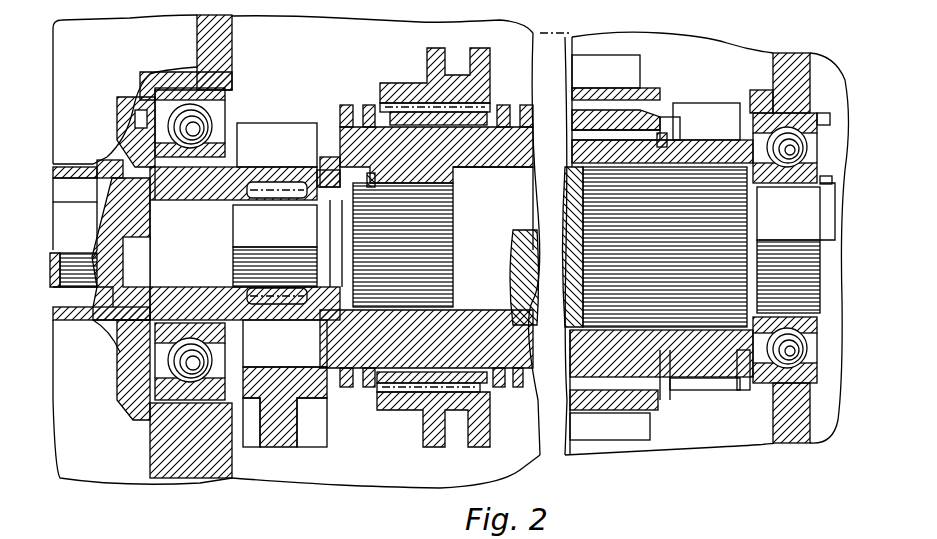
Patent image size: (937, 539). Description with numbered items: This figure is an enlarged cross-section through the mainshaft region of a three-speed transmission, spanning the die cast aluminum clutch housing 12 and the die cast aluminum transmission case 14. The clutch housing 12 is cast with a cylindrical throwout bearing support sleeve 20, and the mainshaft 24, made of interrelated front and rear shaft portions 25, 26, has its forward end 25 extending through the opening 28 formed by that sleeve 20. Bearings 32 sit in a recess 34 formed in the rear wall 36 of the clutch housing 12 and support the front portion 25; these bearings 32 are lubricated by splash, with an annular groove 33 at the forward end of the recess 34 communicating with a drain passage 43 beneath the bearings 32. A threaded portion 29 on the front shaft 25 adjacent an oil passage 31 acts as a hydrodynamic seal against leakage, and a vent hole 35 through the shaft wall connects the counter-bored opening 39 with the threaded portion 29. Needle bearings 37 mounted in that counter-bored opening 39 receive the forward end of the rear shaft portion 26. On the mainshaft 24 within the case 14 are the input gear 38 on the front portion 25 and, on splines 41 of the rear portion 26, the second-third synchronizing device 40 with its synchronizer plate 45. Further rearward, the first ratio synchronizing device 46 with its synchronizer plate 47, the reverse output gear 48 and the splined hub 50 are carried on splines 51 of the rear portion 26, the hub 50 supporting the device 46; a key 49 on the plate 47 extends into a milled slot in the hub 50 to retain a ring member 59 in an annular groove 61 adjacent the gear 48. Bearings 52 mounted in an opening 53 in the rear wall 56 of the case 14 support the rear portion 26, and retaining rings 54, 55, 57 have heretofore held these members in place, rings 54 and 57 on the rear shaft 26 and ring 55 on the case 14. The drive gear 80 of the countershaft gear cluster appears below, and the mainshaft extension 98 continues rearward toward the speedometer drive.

The clutch housing 12 is at (197, 26).
The transmission case 14 is at (784, 423).
The throwout bearing support sleeve 20 is at (75, 158).
The mainshaft 24 is at (80, 302).
The front shaft portion 25 is at (66, 284).
The rear shaft portion 26 is at (250, 218).
The opening 28 is at (90, 164).
The threaded portion 29 is at (130, 172).
The oil passage 31 is at (125, 120).
The bearings 32 is at (220, 118).
The annular groove 33 is at (146, 110).
The recess 34 is at (215, 93).
The vent hole 35 is at (160, 186).
The rear wall 36 is at (222, 56).
The needle bearings 37 is at (245, 286).
The input gear 38 is at (273, 136).
The counter-bored opening 39 is at (222, 247).
The second-third synchronizing device 40 is at (414, 74).
The splines 41 is at (435, 238).
The drain passage 43 is at (195, 406).
The synchronizer plate 45 is at (475, 118).
The first ratio synchronizing device 46 is at (677, 402).
The synchronizer plate 47 is at (585, 118).
The reverse output gear 48 is at (633, 78).
The key 49 is at (667, 132).
The splined hub 50 is at (717, 140).
The splines 51 is at (723, 117).
The bearings 52 is at (820, 155).
The opening 53 is at (814, 117).
The retaining ring 54 is at (372, 181).
The retaining ring 55 is at (768, 110).
The rear wall 56 is at (797, 70).
The retaining ring 57 is at (832, 180).
The ring member 59 is at (660, 135).
The annular groove 61 is at (672, 138).
The drive gear 80 is at (335, 398).
The mainshaft extension 98 is at (808, 237).